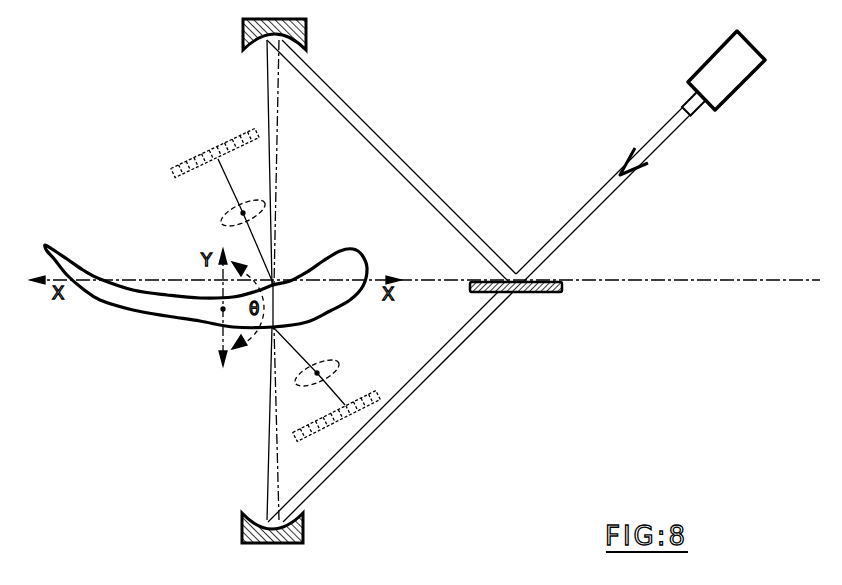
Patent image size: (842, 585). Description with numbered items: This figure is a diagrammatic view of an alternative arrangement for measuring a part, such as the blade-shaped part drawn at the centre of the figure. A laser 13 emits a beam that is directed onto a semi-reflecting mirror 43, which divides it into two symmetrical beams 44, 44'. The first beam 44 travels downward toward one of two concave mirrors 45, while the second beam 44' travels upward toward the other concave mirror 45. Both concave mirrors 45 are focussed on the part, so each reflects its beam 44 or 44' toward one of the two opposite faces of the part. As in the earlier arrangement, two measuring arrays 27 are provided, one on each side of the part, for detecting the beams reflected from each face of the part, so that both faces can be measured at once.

The laser 13 is at (722, 68).
The measuring array 27 is at (189, 163).
The semi-reflecting mirror 43 is at (553, 293).
The beam 44 is at (390, 407).
The beam 44' is at (478, 161).
The concave mirror 45 is at (294, 33).